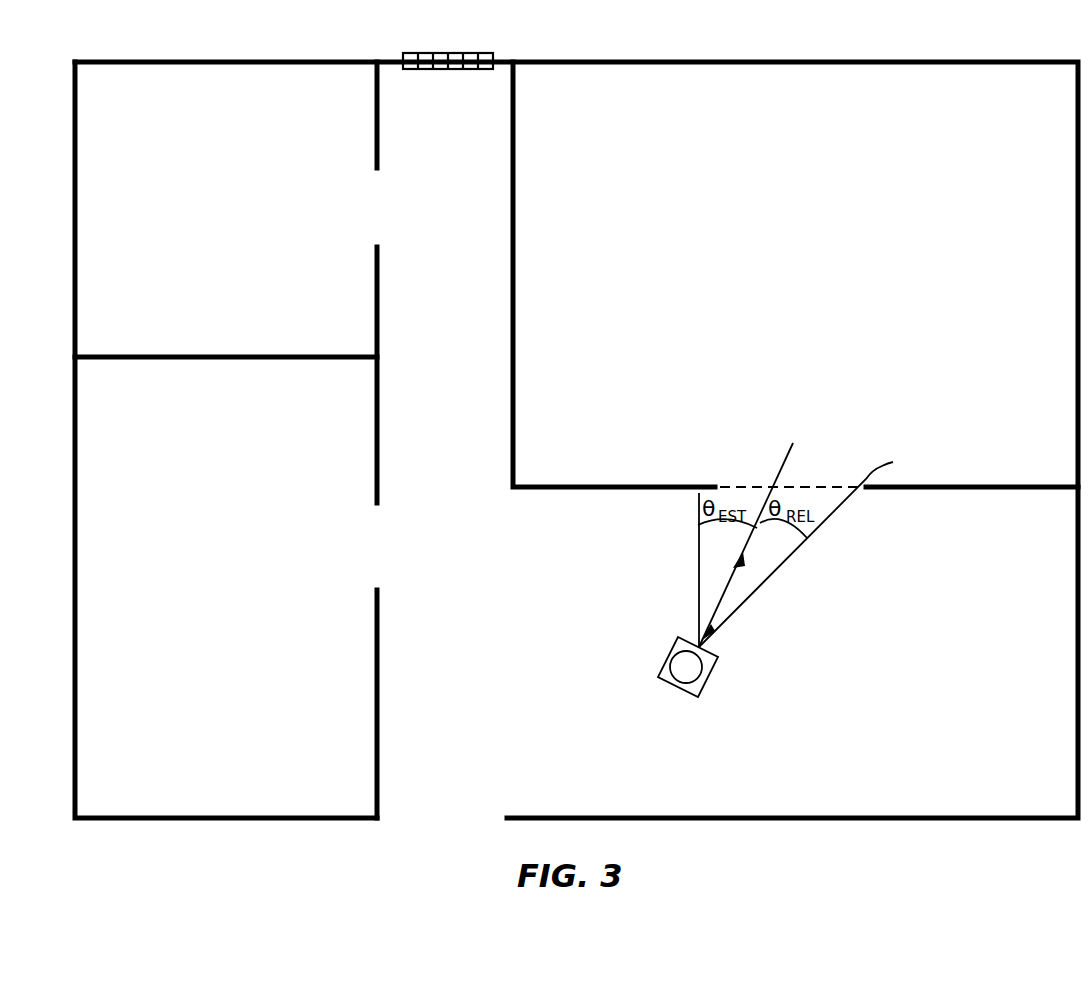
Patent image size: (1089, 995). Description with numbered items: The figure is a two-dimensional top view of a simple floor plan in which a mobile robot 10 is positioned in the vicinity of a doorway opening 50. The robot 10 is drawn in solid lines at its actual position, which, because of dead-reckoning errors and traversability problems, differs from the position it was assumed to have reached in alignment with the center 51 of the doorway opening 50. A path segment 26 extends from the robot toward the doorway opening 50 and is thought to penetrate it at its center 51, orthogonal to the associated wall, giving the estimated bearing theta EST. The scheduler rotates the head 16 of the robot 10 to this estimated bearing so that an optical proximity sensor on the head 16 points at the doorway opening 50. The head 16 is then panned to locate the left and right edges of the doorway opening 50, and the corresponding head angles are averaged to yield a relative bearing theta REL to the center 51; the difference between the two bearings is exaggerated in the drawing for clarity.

The robot 10 is at (707, 688).
The head 16 is at (708, 667).
The estimated heading line 26 is at (779, 460).
The doorway opening 50 is at (811, 547).
The center 51 is at (838, 486).